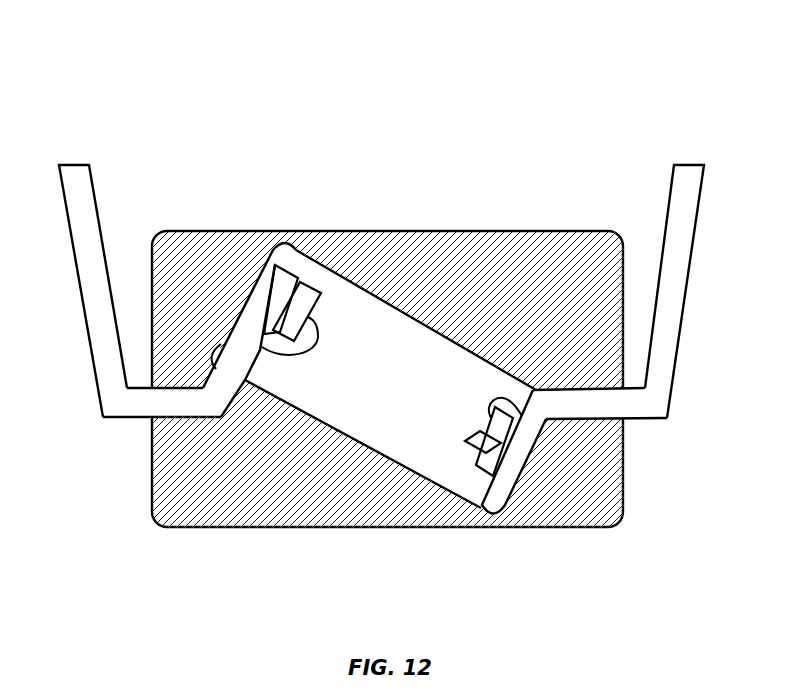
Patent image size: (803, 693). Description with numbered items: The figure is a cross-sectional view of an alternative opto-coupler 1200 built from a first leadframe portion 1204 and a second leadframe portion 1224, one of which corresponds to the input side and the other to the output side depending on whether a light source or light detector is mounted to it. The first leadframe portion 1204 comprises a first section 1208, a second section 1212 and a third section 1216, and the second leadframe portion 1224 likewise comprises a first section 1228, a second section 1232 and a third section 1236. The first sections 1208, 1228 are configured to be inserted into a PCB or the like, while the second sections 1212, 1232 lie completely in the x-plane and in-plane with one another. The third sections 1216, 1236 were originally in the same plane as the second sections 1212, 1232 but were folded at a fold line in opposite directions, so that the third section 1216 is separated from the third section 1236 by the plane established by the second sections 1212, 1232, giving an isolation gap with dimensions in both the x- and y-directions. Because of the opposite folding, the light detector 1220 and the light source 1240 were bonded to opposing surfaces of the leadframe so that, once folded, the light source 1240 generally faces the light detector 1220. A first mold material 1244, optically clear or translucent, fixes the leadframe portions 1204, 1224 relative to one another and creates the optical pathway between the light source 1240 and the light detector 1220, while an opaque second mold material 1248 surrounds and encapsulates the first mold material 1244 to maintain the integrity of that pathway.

The opto-coupler 1200 is at (395, 288).
The first leadframe portion 1204 is at (200, 262).
The first section 1208 is at (67, 291).
The second section 1212 is at (152, 446).
The third section 1216 is at (390, 322).
The light detector 1220 is at (344, 263).
The second leadframe portion 1224 is at (626, 290).
The first section 1228 is at (709, 291).
The second section 1232 is at (608, 446).
The third section 1236 is at (462, 508).
The light source 1240 is at (438, 499).
The first mold material 1244 is at (258, 236).
The second mold material 1248 is at (387, 340).